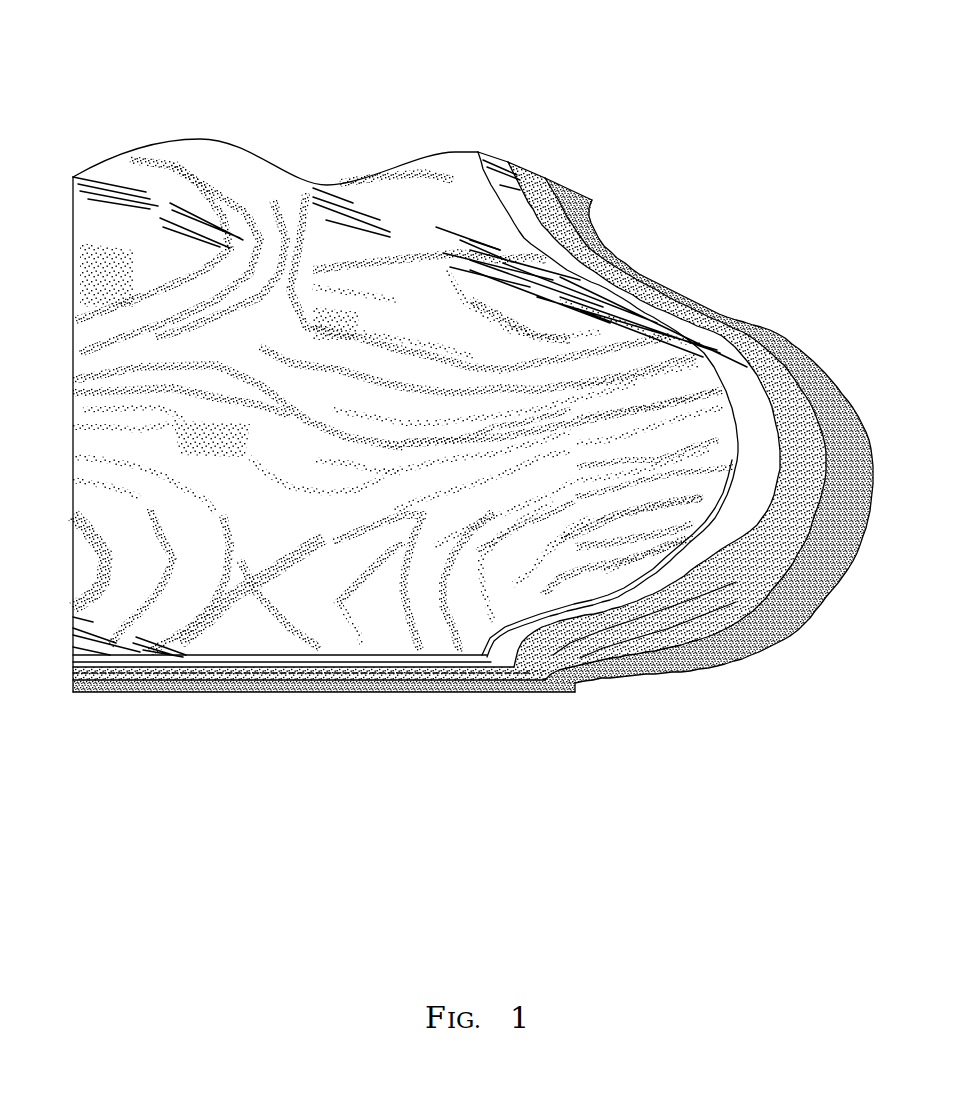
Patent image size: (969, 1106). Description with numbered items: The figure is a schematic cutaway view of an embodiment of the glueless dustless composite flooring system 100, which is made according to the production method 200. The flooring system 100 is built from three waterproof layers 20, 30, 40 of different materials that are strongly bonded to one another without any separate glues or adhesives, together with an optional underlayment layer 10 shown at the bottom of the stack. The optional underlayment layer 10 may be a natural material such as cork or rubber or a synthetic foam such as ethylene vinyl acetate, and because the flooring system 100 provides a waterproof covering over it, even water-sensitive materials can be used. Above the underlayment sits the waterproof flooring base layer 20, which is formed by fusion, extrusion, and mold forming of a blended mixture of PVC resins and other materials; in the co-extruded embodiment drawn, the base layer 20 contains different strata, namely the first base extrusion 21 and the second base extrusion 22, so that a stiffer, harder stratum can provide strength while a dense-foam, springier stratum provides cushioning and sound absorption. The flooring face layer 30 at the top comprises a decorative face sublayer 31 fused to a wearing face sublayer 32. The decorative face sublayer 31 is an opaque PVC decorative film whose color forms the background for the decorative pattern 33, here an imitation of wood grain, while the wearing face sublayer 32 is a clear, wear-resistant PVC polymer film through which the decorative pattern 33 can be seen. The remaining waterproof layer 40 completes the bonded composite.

The production method 200 is at (446, 374).
The glueless dustless composite flooring system 100 is at (446, 394).
The optional underlayment layer 10 is at (573, 207).
The flooring base layer 20 is at (533, 192).
The first base extrusion 21 is at (73, 687).
The second base extrusion 22 is at (73, 676).
The flooring face layer 30 is at (500, 172).
The decorative face sublayer 31 is at (73, 665).
The wearing face sublayer 32 is at (73, 656).
The decorative pattern 33 is at (64, 291).
The waterproof layer 40 is at (460, 163).